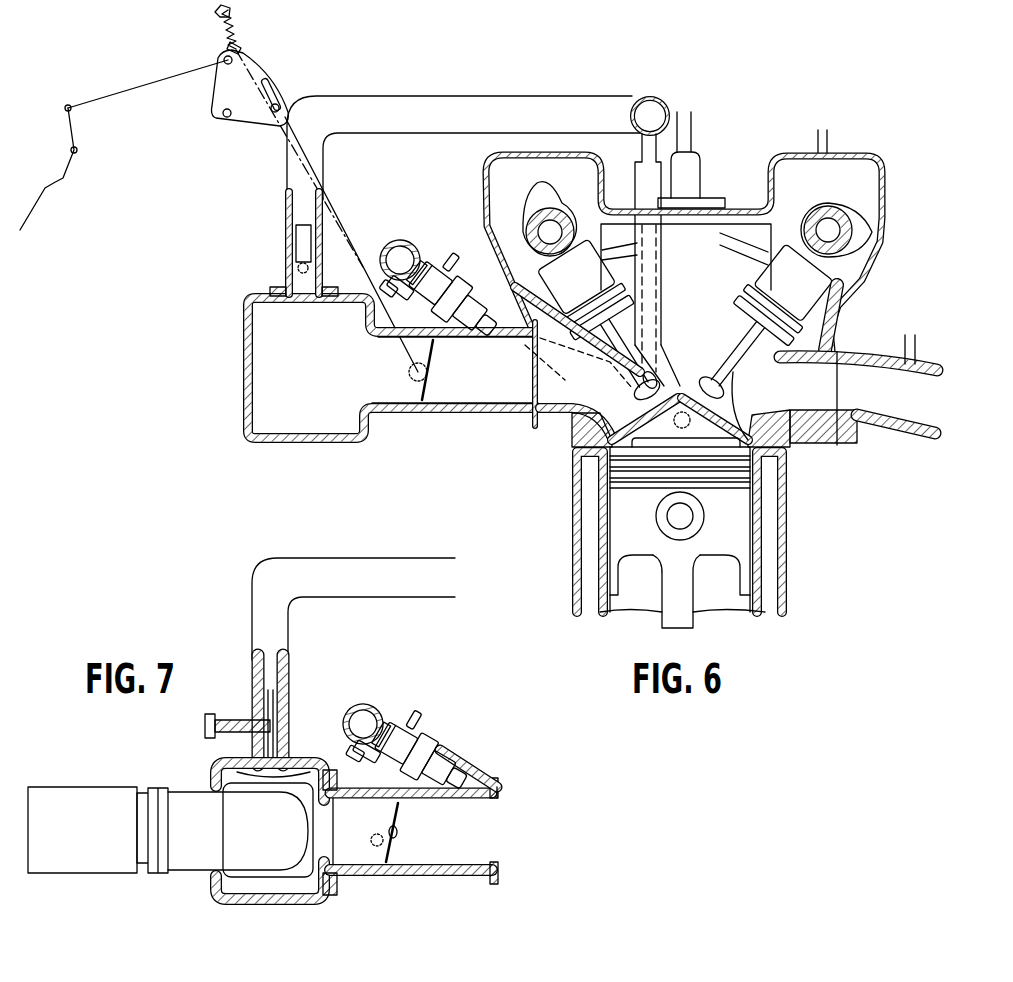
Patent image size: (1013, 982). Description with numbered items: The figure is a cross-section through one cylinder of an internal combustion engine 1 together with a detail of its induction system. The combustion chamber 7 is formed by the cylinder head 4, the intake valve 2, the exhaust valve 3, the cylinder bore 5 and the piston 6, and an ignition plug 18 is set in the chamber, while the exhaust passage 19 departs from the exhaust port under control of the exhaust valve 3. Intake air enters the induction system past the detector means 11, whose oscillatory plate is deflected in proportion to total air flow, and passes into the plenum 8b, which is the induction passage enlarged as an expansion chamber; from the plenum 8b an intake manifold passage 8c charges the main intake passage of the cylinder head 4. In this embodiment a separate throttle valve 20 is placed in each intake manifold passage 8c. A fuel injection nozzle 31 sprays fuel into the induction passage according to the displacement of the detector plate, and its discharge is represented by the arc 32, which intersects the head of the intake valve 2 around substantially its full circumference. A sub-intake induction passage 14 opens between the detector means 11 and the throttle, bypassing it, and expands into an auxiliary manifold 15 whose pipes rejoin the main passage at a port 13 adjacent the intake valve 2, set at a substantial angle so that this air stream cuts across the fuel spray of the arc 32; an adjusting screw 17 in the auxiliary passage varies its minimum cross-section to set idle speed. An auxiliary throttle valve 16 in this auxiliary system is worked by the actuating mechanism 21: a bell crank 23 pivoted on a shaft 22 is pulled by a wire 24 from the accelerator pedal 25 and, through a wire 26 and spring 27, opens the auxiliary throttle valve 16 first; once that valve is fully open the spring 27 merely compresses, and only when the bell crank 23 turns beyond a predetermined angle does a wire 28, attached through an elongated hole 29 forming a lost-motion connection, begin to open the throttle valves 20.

In FIG. 6, the internal combustion engine 1 is at (814, 492).
In FIG. 6, the intake valve 2 is at (628, 392).
In FIG. 6, the exhaust valve 3 is at (745, 398).
In FIG. 6, the cylinder head 4 is at (838, 322).
In FIG. 6, the cylinder bore 5 is at (789, 537).
In FIG. 6, the piston 6 is at (717, 557).
In FIG. 6, the combustion chamber 7 is at (692, 421).
In FIG. 6, the plenum 8b is at (305, 443).
In FIG. 6, the intake manifold passage 8c is at (513, 407).
In FIG. 7, the intake manifold passage 8c is at (450, 868).
In FIG. 7, the detector means 11 is at (73, 787).
In FIG. 6, the port 13 is at (667, 353).
In FIG. 6, the sub-intake induction passage 14 is at (568, 95).
In FIG. 6, the auxiliary manifold 15 is at (665, 102).
In FIG. 6, the auxiliary throttle valve 16 is at (288, 251).
In FIG. 7, the adjusting screw 17 is at (215, 723).
In FIG. 6, the ignition plug 18 is at (687, 373).
In FIG. 6, the exhaust passage 19 is at (850, 412).
In FIG. 6, the throttle valve 20 is at (432, 356).
In FIG. 7, the throttle valve 20 is at (396, 862).
In FIG. 6, the actuating mechanism 21 is at (250, 82).
In FIG. 6, the shaft 22 is at (225, 118).
In FIG. 6, the bell crank 23 is at (226, 87).
In FIG. 6, the wire 24 is at (140, 86).
In FIG. 6, the accelerator pedal 25 is at (63, 180).
In FIG. 6, the wire 26 is at (279, 160).
In FIG. 6, the spring 27 is at (232, 19).
In FIG. 6, the wire 28 is at (342, 222).
In FIG. 6, the elongated hole 29 is at (270, 117).
In FIG. 6, the fuel injection nozzle 31 is at (493, 324).
In FIG. 6, the arc 32 is at (561, 377).